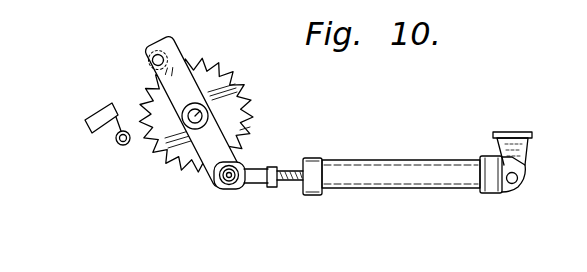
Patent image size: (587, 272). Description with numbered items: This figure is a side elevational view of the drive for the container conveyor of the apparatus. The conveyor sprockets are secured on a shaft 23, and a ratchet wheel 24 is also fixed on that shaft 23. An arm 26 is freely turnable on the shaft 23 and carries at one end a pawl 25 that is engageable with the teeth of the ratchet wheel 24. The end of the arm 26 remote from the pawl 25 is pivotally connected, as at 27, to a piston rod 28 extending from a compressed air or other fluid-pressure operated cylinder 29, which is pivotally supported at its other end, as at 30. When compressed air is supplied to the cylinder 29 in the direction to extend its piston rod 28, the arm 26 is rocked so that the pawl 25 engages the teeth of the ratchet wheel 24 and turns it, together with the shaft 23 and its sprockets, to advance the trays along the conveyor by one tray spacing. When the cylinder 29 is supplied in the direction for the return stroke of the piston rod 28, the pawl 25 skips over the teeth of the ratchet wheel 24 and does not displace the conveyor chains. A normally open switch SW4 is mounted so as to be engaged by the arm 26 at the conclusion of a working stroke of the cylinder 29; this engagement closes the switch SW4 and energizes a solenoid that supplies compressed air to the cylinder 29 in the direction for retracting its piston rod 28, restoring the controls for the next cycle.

The normally open switch SW4 is at (110, 103).
The shaft 23 is at (210, 111).
The ratchet wheel 24 is at (234, 66).
The pawl 25 is at (188, 45).
The arm 26 is at (225, 135).
The pivotal connection 27 is at (221, 190).
The piston rod 28 is at (292, 180).
The fluid-pressure operated cylinder 29 is at (398, 167).
The pivotal support 30 is at (517, 188).